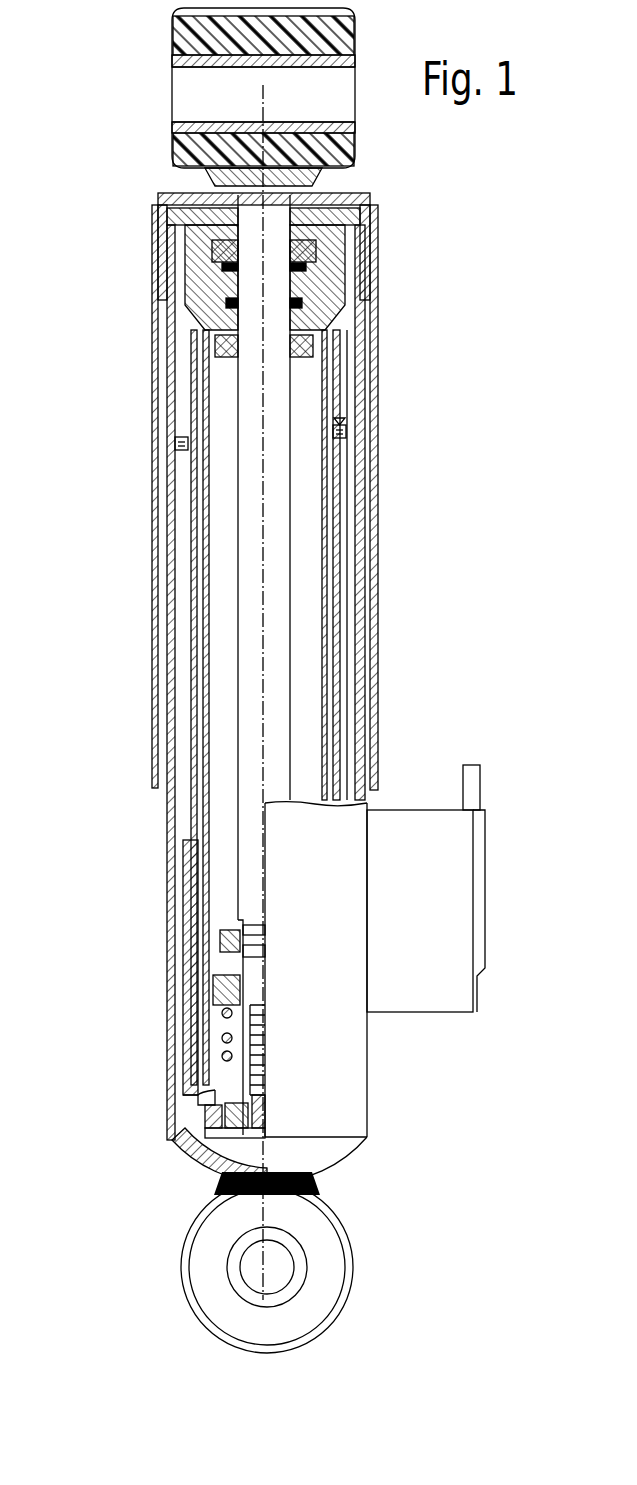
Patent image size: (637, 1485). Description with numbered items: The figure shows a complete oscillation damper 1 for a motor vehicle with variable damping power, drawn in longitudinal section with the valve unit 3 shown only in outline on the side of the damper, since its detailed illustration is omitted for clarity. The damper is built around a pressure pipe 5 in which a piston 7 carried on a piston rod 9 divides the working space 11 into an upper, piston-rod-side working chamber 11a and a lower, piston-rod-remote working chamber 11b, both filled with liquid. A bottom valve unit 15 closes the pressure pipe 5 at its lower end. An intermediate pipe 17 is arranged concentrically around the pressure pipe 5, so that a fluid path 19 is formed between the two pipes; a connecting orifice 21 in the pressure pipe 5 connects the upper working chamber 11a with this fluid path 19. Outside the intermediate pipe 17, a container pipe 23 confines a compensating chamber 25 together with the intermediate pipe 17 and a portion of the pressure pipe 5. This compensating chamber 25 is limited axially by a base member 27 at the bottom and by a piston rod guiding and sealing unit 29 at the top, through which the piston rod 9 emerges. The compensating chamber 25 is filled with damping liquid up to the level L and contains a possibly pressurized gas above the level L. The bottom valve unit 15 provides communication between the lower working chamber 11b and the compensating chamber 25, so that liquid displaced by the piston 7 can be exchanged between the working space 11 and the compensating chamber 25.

The oscillation damper 1 is at (118, 665).
The valve unit 3 is at (429, 802).
The pressure pipe 5 is at (325, 605).
The piston 7 is at (205, 1010).
The piston rod 9 is at (285, 492).
The working space 11 is at (218, 468).
The upper working chamber 11a is at (218, 572).
The lower working chamber 11b is at (215, 1085).
The bottom valve unit 15 is at (215, 1122).
The intermediate pipe 17 is at (338, 695).
The fluid path 19 is at (335, 645).
The connecting orifice 21 is at (325, 410).
The container pipe 23 is at (360, 535).
The compensating chamber 25 is at (345, 572).
The base member 27 is at (176, 1144).
The piston rod guiding and sealing unit 29 is at (342, 299).
The level L is at (178, 437).